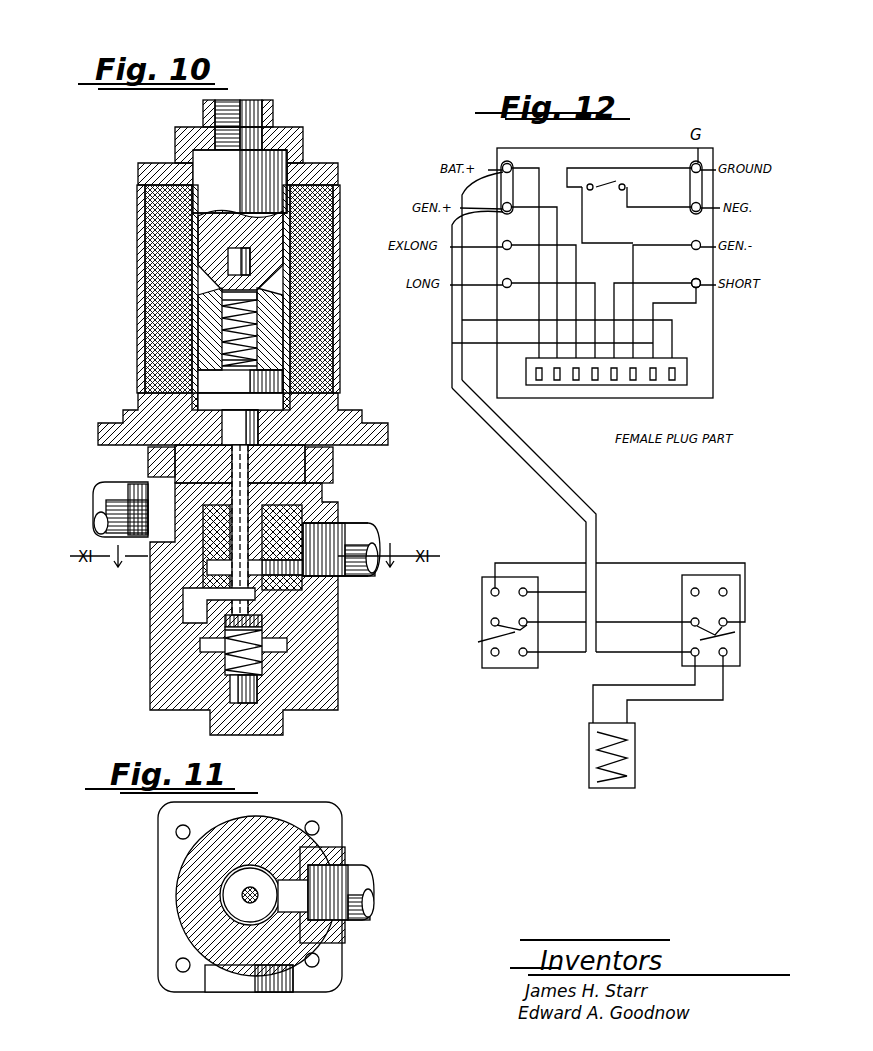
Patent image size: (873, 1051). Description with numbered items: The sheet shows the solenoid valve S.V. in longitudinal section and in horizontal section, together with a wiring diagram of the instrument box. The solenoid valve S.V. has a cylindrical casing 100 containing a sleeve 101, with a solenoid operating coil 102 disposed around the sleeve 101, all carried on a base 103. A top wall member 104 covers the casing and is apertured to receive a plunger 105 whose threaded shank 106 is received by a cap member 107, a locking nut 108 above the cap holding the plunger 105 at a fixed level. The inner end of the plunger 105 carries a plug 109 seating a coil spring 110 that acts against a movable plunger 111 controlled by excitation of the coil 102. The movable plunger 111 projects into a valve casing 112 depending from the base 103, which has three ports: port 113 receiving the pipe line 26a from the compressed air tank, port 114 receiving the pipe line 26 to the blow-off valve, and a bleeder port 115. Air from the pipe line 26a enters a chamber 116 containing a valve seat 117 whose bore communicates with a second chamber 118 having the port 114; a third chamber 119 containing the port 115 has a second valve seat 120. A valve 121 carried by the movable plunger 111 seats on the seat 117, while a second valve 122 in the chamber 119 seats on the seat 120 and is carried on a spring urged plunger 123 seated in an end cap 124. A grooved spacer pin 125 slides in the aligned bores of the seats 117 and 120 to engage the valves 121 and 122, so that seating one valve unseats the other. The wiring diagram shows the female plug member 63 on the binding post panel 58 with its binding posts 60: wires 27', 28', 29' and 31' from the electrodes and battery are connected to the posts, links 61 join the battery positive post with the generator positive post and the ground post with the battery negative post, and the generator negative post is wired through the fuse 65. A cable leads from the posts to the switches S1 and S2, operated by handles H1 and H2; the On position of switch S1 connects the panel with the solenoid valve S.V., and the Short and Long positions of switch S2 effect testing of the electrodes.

In FIG. 10, the cylindrical casing 100 is at (238, 256).
In FIG. 10, the sleeve 101 is at (200, 238).
In FIG. 10, the solenoid operating coil 102 is at (225, 320).
In FIG. 12, the solenoid operating coil 102 is at (614, 780).
In FIG. 10, the base 103 is at (172, 451).
In FIG. 10, the top wall member 104 is at (138, 174).
In FIG. 10, the plunger 105 is at (198, 175).
In FIG. 10, the threaded shank 106 is at (252, 118).
In FIG. 10, the cap member 107 is at (303, 138).
In FIG. 10, the locking nut 108 is at (203, 112).
In FIG. 10, the plug 109 is at (160, 300).
In FIG. 10, the coil spring 110 is at (200, 345).
In FIG. 10, the movable plunger 111 is at (240, 380).
In FIG. 10, the valve casing 112 is at (333, 468).
In FIG. 10, the port 113 is at (165, 478).
In FIG. 10, the port 114 is at (290, 562).
In FIG. 11, the port 114 is at (362, 878).
In FIG. 11, the bleeder port 115 is at (225, 985).
In FIG. 10, the chamber 116 is at (322, 500).
In FIG. 10, the valve seat 117 is at (225, 492).
In FIG. 10, the second chamber 118 is at (292, 585).
In FIG. 10, the third chamber 119 is at (200, 600).
In FIG. 10, the second valve seat 120 is at (210, 583).
In FIG. 10, the valve 121 is at (253, 496).
In FIG. 10, the second valve 122 is at (250, 615).
In FIG. 10, the spring urged plunger 123 is at (230, 620).
In FIG. 10, the end cap 124 is at (325, 702).
In FIG. 10, the spacer pin 125 is at (225, 576).
In FIG. 10, the pipe line 26 is at (366, 576).
In FIG. 10, the pipe line 26a is at (108, 492).
In FIG. 12, the positive side wire of battery 31' is at (513, 169).
In FIG. 12, the binding posts 60 is at (700, 165).
In FIG. 12, the links 61 is at (455, 190).
In FIG. 12, the fuse 65 is at (605, 192).
In FIG. 12, the wire 29' is at (463, 258).
In FIG. 12, the wire 28' is at (466, 297).
In FIG. 12, the wire 27' is at (678, 271).
In FIG. 12, the binding post panel 58 is at (714, 358).
In FIG. 12, the female plug member 63 is at (682, 384).
In FIG. 12, the switch S1 is at (738, 660).
In FIG. 12, the second switch S2 is at (494, 668).
In FIG. 12, the switch handle H1 is at (738, 632).
In FIG. 12, the operating handle H2 is at (478, 642).
In FIG. 10, the solenoid valve S.V. is at (145, 370).
In FIG. 11, the solenoid valve S.V. is at (168, 858).